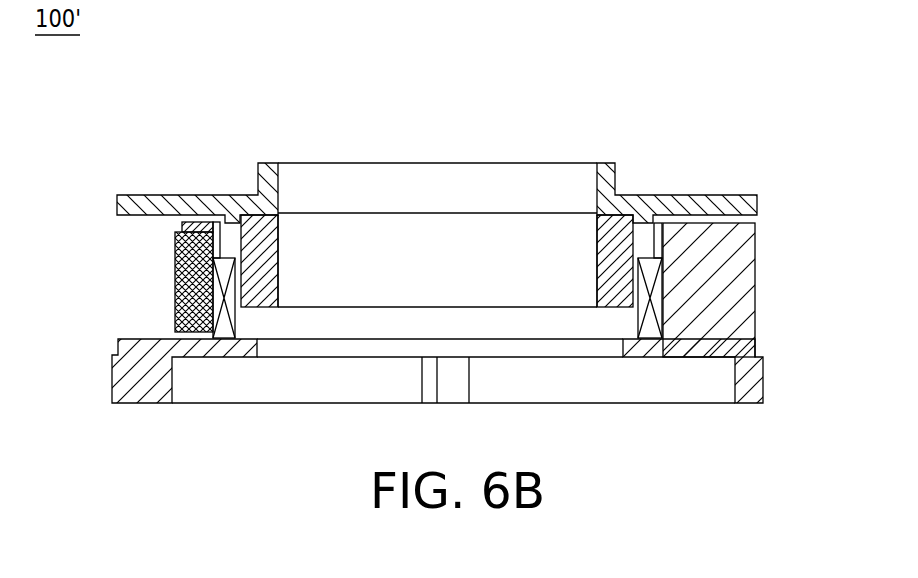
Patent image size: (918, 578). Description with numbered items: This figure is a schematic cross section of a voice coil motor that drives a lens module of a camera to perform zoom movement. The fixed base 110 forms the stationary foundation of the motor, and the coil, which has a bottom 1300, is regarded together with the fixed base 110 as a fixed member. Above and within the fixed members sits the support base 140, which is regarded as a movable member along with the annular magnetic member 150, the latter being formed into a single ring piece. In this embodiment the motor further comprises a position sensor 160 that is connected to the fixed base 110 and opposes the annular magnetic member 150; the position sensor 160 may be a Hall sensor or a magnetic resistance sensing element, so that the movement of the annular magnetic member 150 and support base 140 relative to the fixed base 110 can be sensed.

The fixed base 110 is at (148, 372).
The bottom of the coil 1300 is at (235, 326).
The support base 140 is at (210, 197).
The annular magnetic member 150 is at (640, 237).
The position sensor 160 is at (174, 270).